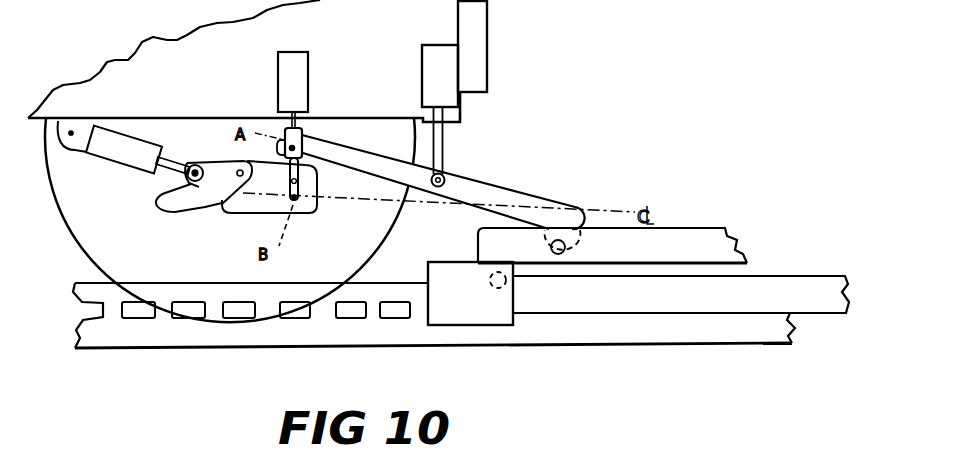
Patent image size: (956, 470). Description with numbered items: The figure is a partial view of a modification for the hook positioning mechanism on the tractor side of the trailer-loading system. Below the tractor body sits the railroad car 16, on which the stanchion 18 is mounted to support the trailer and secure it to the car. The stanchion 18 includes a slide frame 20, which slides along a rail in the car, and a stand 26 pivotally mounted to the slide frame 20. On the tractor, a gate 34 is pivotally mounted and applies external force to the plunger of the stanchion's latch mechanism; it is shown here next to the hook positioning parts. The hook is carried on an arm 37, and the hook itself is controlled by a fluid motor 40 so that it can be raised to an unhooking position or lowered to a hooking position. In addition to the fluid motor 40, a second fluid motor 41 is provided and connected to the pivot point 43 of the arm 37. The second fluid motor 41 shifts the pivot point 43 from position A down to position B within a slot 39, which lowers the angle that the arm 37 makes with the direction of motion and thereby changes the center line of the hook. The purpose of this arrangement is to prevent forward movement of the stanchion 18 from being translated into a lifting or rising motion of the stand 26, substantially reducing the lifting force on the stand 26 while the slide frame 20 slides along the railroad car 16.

The railroad car 16 is at (383, 328).
The stanchion 18 is at (731, 213).
The slide frame 20 is at (485, 308).
The stand 26 is at (677, 240).
The gate 34 is at (188, 212).
The arm 37 is at (477, 190).
The slot 39 is at (291, 181).
The fluid motor 40 is at (433, 70).
The second fluid motor 41 is at (298, 85).
The pivot point 43 is at (316, 142).